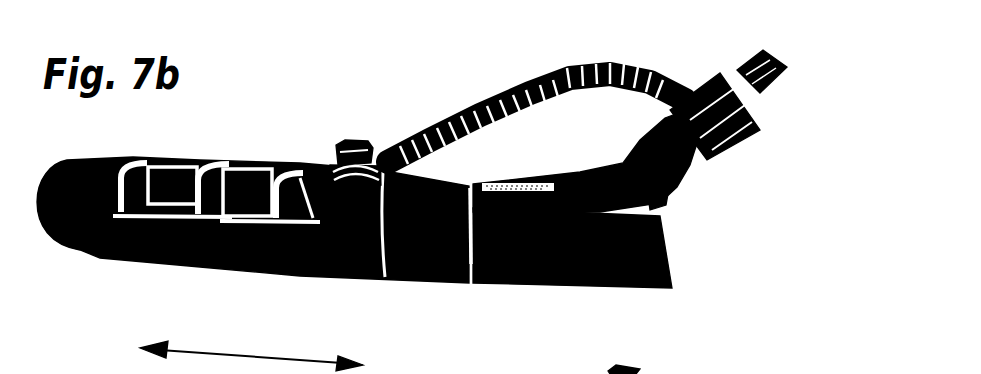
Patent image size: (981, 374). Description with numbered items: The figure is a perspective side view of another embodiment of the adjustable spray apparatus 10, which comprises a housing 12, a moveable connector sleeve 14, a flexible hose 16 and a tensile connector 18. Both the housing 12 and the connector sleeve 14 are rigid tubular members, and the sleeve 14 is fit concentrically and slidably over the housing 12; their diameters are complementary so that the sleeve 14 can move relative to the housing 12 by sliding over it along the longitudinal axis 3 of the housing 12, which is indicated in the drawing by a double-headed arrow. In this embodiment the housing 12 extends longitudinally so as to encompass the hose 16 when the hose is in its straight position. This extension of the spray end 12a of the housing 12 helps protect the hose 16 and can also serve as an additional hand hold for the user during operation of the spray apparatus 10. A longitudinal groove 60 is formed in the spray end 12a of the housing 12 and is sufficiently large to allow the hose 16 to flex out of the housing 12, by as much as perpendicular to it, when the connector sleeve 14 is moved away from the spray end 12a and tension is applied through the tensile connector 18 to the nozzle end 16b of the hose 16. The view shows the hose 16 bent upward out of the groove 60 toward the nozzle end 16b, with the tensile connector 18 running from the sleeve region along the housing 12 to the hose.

The longitudinal axis 3 is at (299, 360).
The adjustable spray apparatus 10 is at (312, 132).
The housing 12 is at (70, 248).
The spray end 12a is at (580, 285).
The connector sleeve 14 is at (215, 272).
The flexible hose 16 is at (582, 183).
The nozzle end 16b is at (665, 196).
The tensile connector 18 is at (557, 79).
The longitudinal groove 60 is at (468, 190).